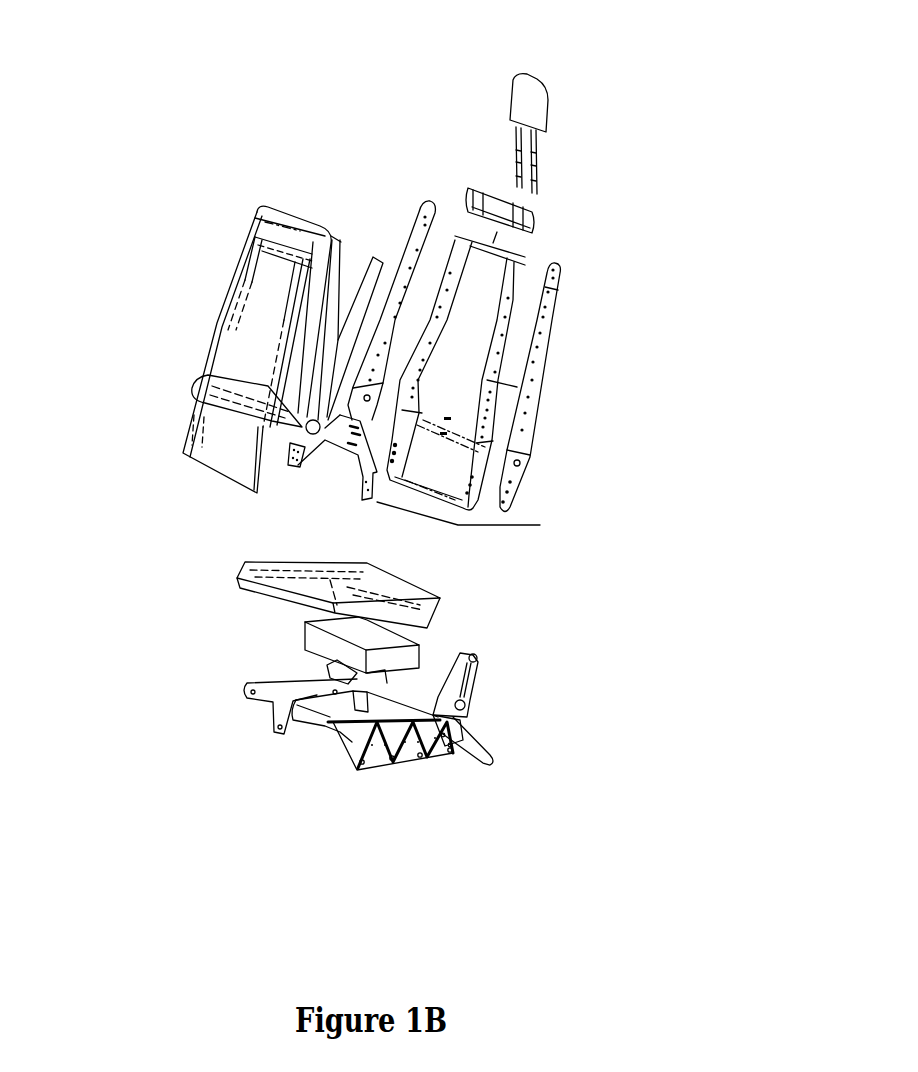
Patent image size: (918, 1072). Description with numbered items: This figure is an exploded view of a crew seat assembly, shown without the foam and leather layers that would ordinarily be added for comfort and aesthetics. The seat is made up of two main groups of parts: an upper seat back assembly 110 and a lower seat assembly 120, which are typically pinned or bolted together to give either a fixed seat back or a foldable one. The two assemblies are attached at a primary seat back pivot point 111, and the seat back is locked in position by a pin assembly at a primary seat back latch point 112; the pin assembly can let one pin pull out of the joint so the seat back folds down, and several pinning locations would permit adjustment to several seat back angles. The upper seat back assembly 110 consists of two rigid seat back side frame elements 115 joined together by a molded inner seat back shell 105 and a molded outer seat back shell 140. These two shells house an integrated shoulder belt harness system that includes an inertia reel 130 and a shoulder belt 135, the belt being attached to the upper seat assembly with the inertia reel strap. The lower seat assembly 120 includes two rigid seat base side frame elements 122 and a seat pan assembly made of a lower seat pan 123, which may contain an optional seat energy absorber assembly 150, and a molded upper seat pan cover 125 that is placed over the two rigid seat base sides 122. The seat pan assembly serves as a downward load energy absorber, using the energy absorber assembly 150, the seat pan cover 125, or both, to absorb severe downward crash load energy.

The molded inner seat back shell 105 is at (220, 273).
The upper seat back assembly 110 is at (135, 183).
The primary seat back pivot point 111 is at (478, 660).
The primary seat back latch point 112 is at (473, 705).
The rigid seat back side frame elements 115 is at (427, 203).
The lower seat assembly 120 is at (135, 548).
The rigid seat base side frame elements 122 is at (273, 737).
The lower seat pan 123 is at (312, 723).
The molded upper seat pan cover 125 is at (402, 580).
The inertia reel 130 is at (301, 458).
The shoulder belt 135 is at (358, 274).
The molded outer seat back shell 140 is at (530, 280).
The seat energy absorber assembly 150 is at (298, 638).